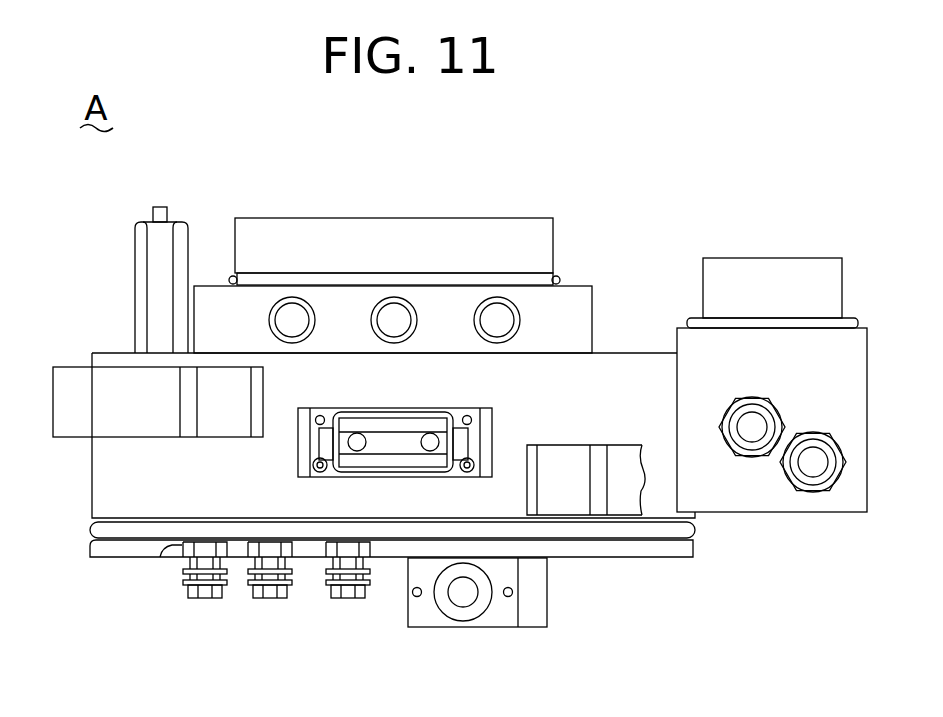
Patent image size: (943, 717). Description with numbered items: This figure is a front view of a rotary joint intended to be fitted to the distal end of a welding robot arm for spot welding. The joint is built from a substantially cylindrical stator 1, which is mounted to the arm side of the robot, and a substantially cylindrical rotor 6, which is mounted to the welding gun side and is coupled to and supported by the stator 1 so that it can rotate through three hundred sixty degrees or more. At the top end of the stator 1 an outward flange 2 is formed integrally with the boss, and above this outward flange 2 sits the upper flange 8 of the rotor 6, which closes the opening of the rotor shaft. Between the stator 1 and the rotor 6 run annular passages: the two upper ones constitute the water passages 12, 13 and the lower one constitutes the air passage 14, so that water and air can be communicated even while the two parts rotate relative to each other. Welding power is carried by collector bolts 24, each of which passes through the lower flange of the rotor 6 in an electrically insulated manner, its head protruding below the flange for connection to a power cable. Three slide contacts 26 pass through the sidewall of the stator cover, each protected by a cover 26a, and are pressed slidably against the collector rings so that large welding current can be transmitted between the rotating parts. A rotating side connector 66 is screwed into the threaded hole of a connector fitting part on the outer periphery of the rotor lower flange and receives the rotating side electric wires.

The stator 1 is at (88, 497).
The outward flange 2 is at (90, 460).
The rotor 6 is at (295, 214).
The upper flange 8 is at (252, 237).
The water passage 12 is at (505, 330).
The water passage 13 is at (397, 330).
The air passage 14 is at (306, 330).
The collector bolt 24 is at (348, 600).
The slide contact 26 is at (388, 446).
The cover 26a is at (70, 378).
The rotating side connector 66 is at (463, 621).